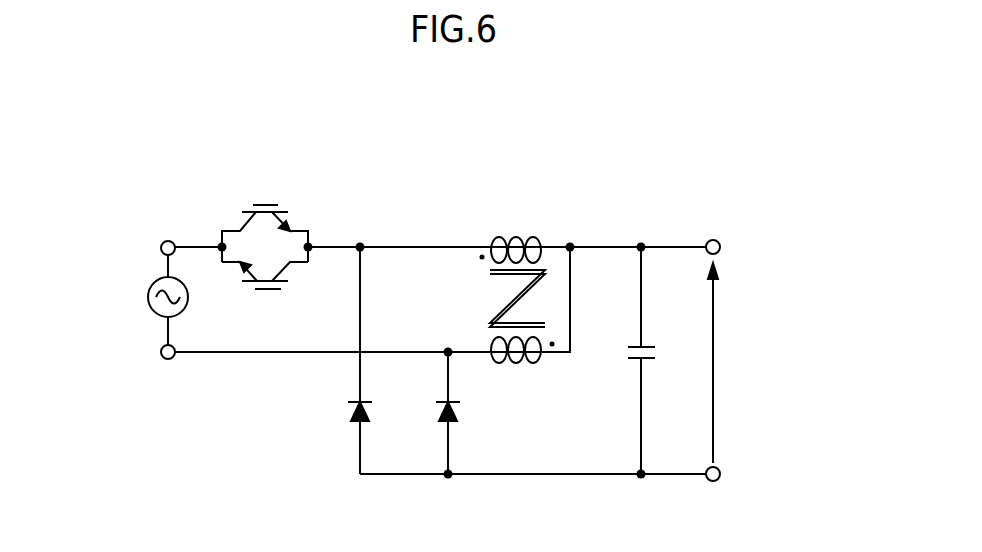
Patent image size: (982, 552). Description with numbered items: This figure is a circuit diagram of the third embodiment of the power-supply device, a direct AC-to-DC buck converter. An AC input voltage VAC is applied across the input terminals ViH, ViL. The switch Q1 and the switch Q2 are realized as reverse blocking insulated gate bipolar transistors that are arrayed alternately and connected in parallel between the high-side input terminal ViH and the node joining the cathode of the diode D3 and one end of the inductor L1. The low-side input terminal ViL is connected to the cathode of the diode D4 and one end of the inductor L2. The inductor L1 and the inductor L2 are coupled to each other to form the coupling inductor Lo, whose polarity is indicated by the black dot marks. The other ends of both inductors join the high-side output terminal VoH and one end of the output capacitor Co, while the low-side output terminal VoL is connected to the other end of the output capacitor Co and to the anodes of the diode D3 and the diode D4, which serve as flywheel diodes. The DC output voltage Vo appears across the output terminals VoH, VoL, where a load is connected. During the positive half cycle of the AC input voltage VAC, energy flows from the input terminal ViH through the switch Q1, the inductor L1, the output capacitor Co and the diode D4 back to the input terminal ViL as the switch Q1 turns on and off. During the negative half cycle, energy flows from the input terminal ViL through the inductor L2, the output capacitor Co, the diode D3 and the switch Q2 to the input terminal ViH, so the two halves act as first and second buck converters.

The input terminal ViH is at (163, 240).
The input terminal ViL is at (162, 360).
The AC input voltage VAC is at (147, 282).
The switch Q1 is at (277, 205).
The switch Q2 is at (255, 289).
The inductor L1 is at (520, 238).
The inductor L2 is at (520, 363).
The coupling inductor Lo is at (472, 314).
The output capacitor Co is at (648, 347).
The DC output voltage Vo is at (729, 363).
The output terminal VoH is at (722, 240).
The output terminal VoL is at (722, 468).
The diode D3 is at (357, 418).
The diode D4 is at (445, 418).